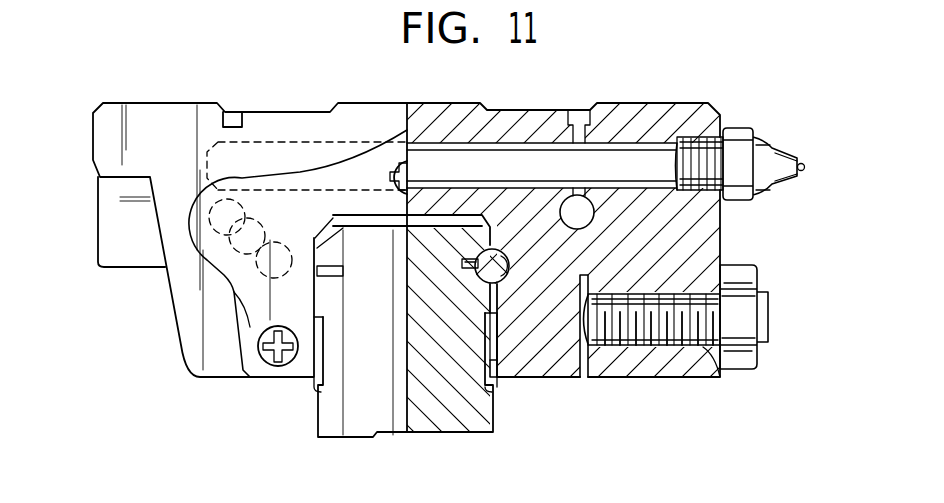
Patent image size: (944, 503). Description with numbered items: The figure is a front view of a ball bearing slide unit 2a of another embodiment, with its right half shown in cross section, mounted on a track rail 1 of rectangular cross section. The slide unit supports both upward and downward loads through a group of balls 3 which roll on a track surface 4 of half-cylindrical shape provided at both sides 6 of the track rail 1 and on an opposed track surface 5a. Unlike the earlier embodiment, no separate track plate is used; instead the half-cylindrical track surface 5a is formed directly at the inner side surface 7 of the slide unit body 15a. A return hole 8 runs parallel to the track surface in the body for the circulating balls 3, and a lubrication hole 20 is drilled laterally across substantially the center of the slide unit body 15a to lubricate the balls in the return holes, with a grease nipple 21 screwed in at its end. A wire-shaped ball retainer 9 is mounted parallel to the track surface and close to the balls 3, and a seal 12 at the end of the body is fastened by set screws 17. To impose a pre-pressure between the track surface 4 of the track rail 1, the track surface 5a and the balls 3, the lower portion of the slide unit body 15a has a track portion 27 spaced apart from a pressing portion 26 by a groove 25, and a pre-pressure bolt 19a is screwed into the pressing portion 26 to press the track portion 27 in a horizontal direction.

The track rail 1 is at (323, 424).
The slide unit 2a is at (368, 98).
The balls 3 is at (313, 284).
The track surface 4 is at (487, 290).
The track surface 5a is at (502, 248).
The sides 6 is at (498, 300).
The inner side surface 7 is at (320, 375).
The return hole 8 is at (200, 262).
The ball retainer 9 is at (337, 262).
The seal 12 is at (250, 327).
The slide unit body 15a is at (545, 118).
The set screws 17 is at (262, 356).
The pre-pressure bolt 19a is at (704, 362).
The lubrication hole 20 is at (636, 150).
The grease nipple 21 is at (752, 140).
The groove 25 is at (584, 365).
The pressing portion 26 is at (665, 372).
The track portion 27 is at (557, 372).